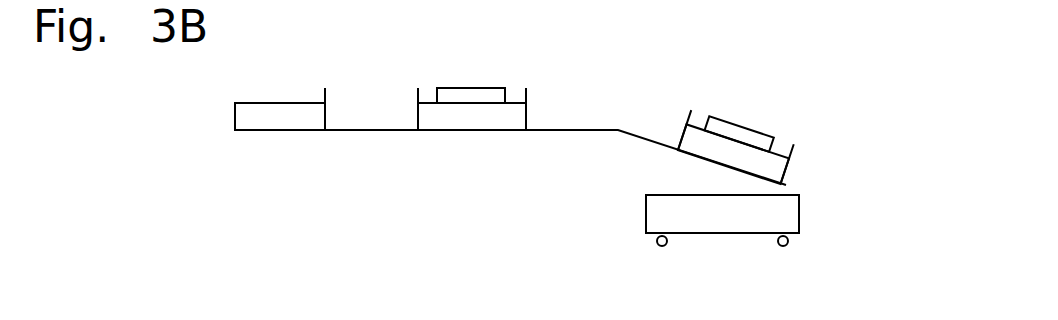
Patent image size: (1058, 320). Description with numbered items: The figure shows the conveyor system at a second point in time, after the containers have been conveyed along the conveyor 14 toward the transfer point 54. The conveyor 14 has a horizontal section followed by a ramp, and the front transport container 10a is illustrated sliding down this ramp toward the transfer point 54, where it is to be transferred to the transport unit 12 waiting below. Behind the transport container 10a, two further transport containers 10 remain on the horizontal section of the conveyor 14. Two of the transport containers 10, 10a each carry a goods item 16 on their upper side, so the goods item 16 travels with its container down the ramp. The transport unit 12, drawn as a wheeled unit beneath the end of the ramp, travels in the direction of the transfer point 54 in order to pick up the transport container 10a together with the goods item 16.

The transport container 10 is at (275, 116).
The transport container 10a is at (740, 131).
The transport unit 12 is at (658, 213).
The conveyor 14 is at (227, 119).
The goods item 16 is at (430, 108).
The transfer point 54 is at (822, 216).